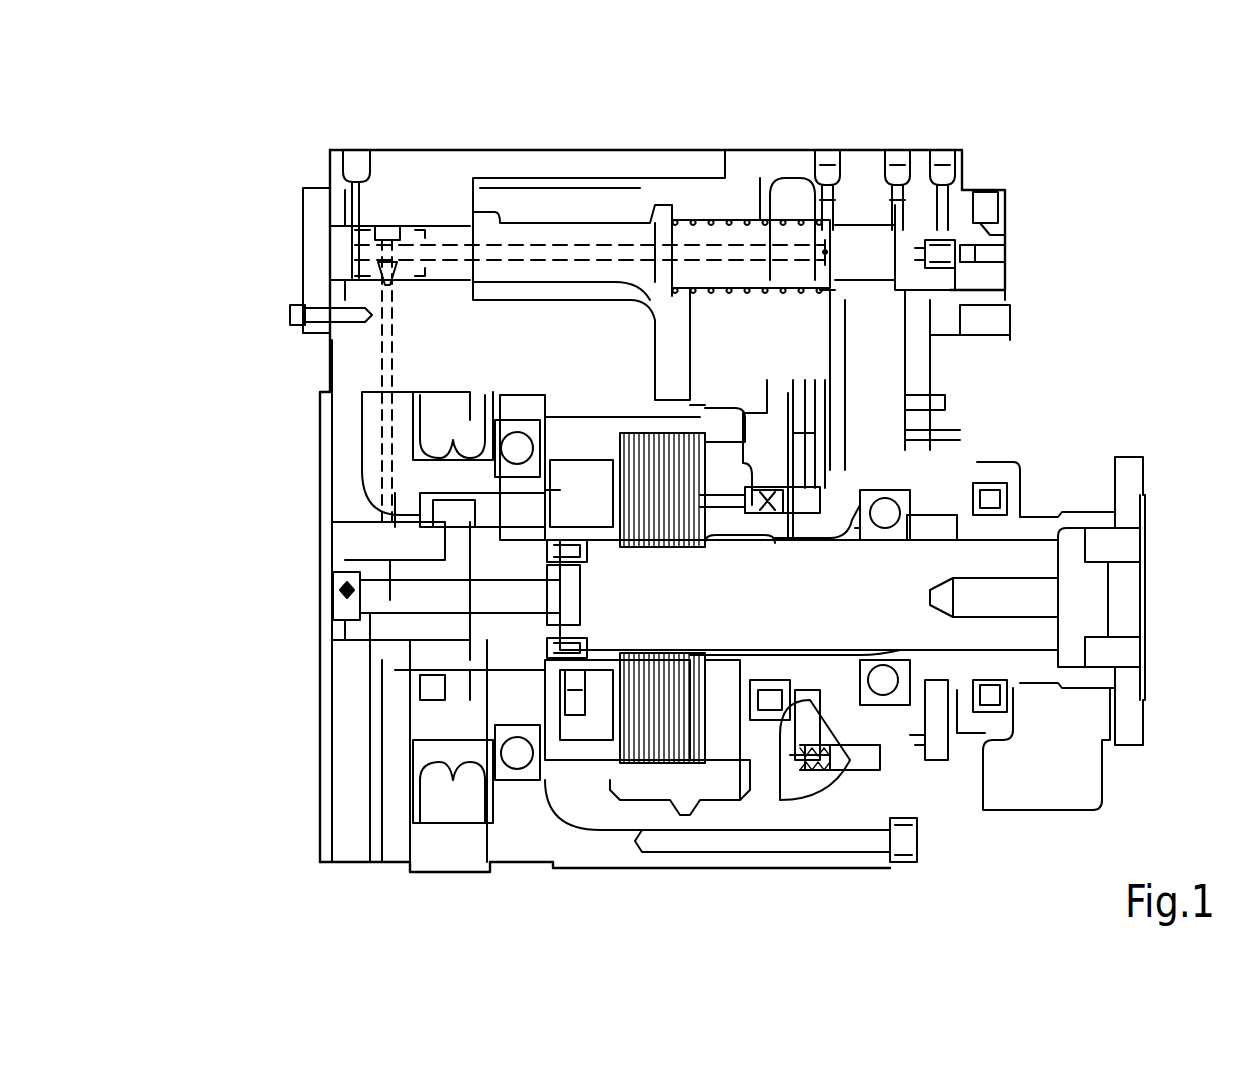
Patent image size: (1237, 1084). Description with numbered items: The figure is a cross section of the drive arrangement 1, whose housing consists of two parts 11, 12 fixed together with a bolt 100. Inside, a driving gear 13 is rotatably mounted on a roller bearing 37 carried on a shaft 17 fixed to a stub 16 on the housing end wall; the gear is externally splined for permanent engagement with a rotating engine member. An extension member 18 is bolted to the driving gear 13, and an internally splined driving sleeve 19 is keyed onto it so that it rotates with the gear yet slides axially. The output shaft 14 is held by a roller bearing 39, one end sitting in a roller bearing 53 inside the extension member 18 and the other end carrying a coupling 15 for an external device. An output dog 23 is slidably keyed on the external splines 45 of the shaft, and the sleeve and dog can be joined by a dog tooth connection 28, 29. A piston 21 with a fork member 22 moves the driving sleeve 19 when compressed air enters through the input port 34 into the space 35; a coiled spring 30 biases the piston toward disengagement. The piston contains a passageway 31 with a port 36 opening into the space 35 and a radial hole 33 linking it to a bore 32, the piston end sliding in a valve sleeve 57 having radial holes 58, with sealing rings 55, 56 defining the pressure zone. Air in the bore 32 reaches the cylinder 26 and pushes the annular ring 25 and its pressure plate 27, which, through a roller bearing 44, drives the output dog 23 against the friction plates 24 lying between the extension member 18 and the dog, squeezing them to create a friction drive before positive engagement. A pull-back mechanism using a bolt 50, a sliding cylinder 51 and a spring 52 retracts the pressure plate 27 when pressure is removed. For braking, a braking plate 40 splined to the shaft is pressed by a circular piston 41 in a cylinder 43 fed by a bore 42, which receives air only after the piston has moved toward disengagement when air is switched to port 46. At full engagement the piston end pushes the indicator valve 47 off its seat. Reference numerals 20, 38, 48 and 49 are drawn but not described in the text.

The drive arrangement 1 is at (251, 865).
The housing part 11 is at (620, 160).
The housing part 12 is at (755, 160).
The driving gear 13 is at (420, 860).
The output shaft 14 is at (1040, 562).
The coupling 15 is at (1135, 500).
The stub 16 is at (330, 625).
The shaft 17 is at (365, 652).
The extension member 18 is at (558, 750).
The driving sleeve 19 is at (605, 782).
The stator housing 20 is at (665, 800).
The piston 21 is at (535, 232).
The fork member 22 is at (665, 335).
The output dog 23 is at (750, 775).
The friction plates 24 is at (625, 430).
The annular ring 25 is at (820, 690).
The cylinder 26 is at (810, 705).
The pressure plate 27 is at (800, 432).
The dog tooth connection 28 is at (757, 415).
The dog tooth connection 29 is at (720, 432).
The coiled spring 30 is at (706, 210).
The passageway 31 is at (652, 250).
The bore 32 is at (952, 290).
The radial hole 33 is at (835, 268).
The input port 34 is at (356, 160).
The space 35 is at (348, 255).
The port 36 is at (365, 250).
The roller bearing 37 is at (435, 686).
The bearing 38 is at (505, 710).
The roller bearing 39 is at (890, 508).
The braking plate 40 is at (938, 718).
The circular piston 41 is at (918, 738).
The bore 42 is at (900, 345).
The cylinder 43 is at (937, 713).
The roller bearing 44 is at (762, 698).
The external splines 45 is at (762, 657).
The port 46 is at (938, 170).
The valve 47 is at (958, 256).
The connector 48 is at (980, 205).
The oil inlet 49 is at (1012, 253).
The bolt 50 is at (848, 745).
The cylinder 51 is at (790, 705).
The spring 52 is at (812, 713).
The roller bearing 53 is at (548, 655).
The sealing ring 55 is at (822, 232).
The sealing ring 56 is at (840, 232).
The valve sleeve 57 is at (965, 280).
The radial holes 58 is at (825, 283).
The bolt 100 is at (905, 843).